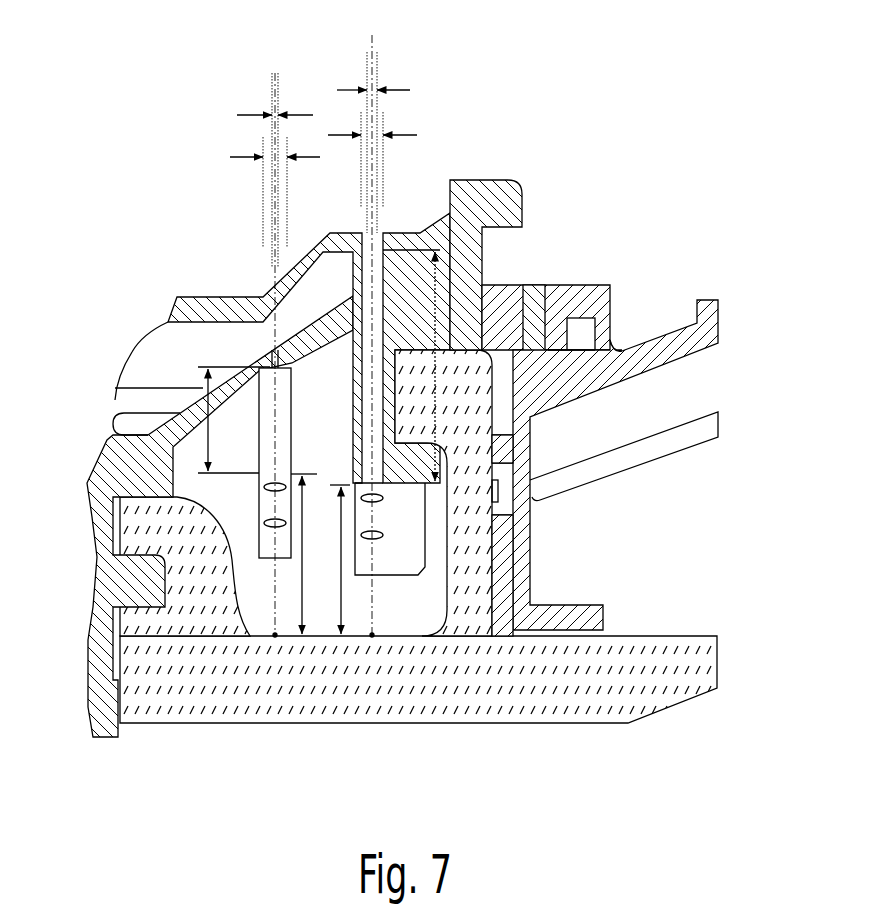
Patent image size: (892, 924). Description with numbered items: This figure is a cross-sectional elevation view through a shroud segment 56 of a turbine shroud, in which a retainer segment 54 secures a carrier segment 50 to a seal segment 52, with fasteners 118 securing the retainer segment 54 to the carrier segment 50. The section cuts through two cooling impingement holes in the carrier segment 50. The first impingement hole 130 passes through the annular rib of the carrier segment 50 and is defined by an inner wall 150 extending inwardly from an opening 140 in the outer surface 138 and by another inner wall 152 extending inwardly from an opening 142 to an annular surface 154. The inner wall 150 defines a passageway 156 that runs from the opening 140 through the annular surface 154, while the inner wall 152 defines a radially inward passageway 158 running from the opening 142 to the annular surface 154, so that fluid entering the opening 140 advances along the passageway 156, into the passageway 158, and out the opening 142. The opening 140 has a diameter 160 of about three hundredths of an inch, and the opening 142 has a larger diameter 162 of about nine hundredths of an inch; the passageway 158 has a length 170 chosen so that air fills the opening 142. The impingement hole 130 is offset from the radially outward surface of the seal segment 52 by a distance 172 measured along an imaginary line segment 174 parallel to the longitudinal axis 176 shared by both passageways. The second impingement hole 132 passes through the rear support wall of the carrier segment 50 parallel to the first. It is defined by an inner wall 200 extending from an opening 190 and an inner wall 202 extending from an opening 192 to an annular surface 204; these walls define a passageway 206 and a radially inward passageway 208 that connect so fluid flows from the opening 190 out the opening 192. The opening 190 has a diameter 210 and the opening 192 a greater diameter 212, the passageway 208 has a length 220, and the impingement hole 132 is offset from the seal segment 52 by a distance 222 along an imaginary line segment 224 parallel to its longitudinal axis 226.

The carrier segment 50 is at (466, 180).
The seal segment 52 is at (717, 658).
The retainer segment 54 is at (718, 302).
The shroud segment 56 is at (643, 100).
The fasteners 118 is at (532, 285).
The impingement hole 130 is at (222, 345).
The impingement hole 132 is at (412, 200).
The outer surface 138 is at (175, 412).
The opening 140 is at (279, 355).
The opening 142 is at (260, 473).
The inner wall 150 is at (273, 352).
The inner wall 152 is at (291, 405).
The annular surface 154 is at (300, 377).
The passageway 156 is at (300, 315).
The passageway 158 is at (266, 408).
The diameter 160 is at (253, 110).
The diameter 162 is at (240, 155).
The length 170 is at (223, 423).
The distance 172 is at (304, 555).
The imaginary line segment 174 is at (283, 638).
The longitudinal axis 176 is at (274, 572).
The opening 190 is at (378, 257).
The opening 192 is at (358, 476).
The inner wall 200 is at (368, 230).
The inner wall 202 is at (350, 402).
The annular surface 204 is at (384, 237).
The passageway 206 is at (362, 240).
The passageway 208 is at (379, 363).
The diameter 210 is at (397, 83).
The diameter 212 is at (407, 130).
The length 220 is at (435, 305).
The distance 222 is at (340, 565).
The imaginary line segment 224 is at (344, 598).
The longitudinal axis 226 is at (376, 580).